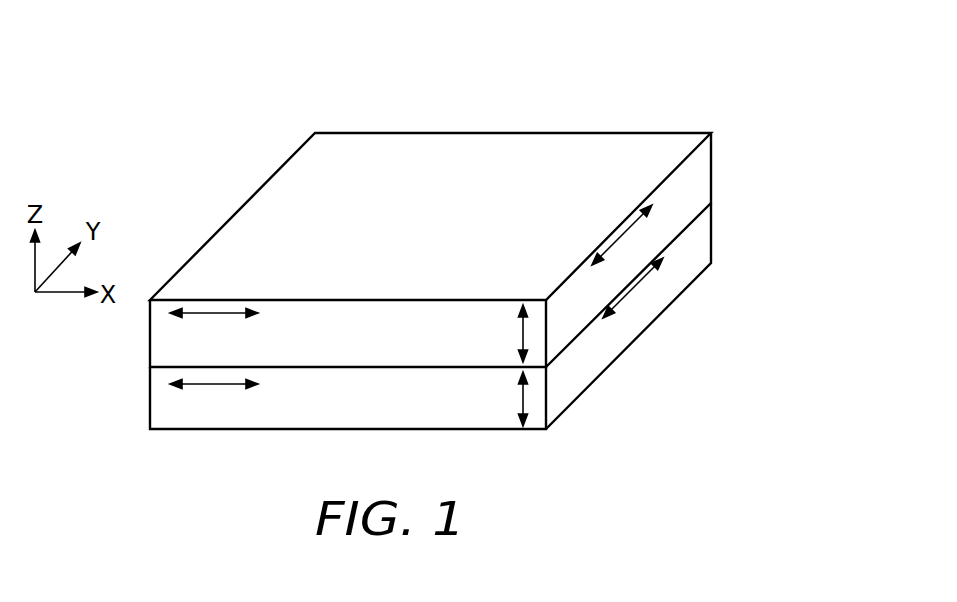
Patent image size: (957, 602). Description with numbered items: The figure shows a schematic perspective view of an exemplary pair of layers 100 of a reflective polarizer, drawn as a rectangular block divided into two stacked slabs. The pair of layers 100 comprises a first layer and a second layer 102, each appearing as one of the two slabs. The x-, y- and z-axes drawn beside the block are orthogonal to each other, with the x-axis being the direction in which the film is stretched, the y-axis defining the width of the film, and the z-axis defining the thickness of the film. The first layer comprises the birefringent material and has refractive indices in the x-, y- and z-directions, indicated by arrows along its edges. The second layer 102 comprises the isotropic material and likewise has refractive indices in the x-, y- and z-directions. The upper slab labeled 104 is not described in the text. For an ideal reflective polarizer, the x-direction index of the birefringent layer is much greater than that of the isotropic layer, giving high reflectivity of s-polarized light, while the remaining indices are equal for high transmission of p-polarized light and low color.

The pair of layers 100 is at (649, 76).
The second layer 102 is at (700, 243).
The second layer 104 is at (700, 168).